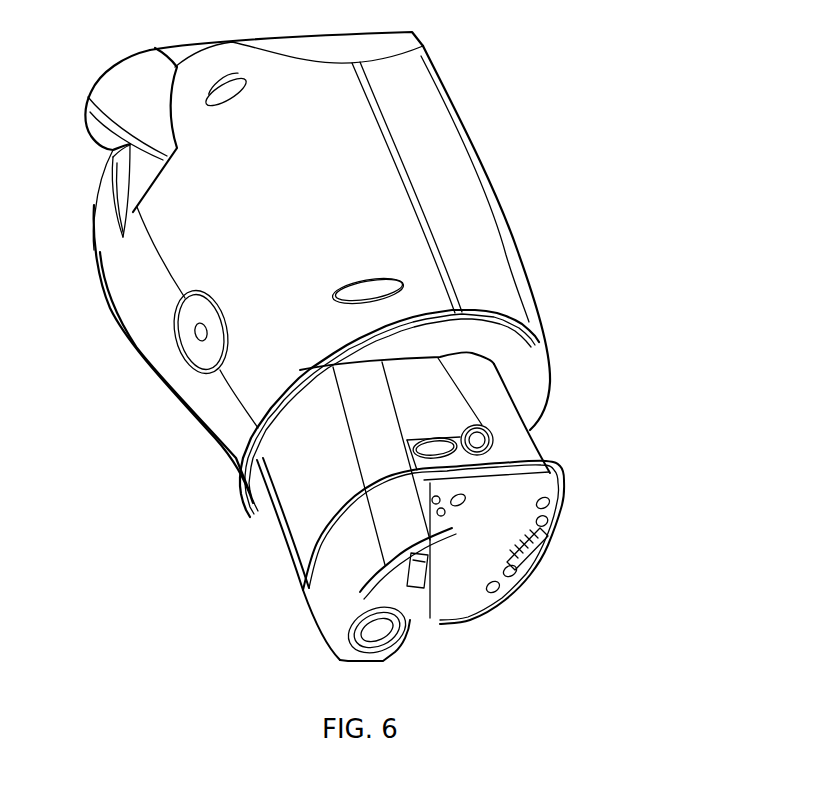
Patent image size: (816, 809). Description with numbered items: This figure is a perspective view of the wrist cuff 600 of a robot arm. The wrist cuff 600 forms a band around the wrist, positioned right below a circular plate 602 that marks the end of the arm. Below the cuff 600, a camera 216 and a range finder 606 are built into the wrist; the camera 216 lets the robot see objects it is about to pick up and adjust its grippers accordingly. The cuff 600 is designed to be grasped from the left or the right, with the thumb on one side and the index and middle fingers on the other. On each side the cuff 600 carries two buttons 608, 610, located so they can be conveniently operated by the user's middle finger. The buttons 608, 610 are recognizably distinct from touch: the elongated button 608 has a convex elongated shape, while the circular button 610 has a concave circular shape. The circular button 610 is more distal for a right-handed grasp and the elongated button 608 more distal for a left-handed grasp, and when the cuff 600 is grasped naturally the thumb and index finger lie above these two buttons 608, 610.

The circular plate 602 is at (538, 371).
The wrist cuff 600 is at (292, 482).
The range finder 606 is at (432, 577).
The elongated button 608 is at (438, 440).
The circular button 610 is at (470, 438).
The camera 216 is at (403, 637).